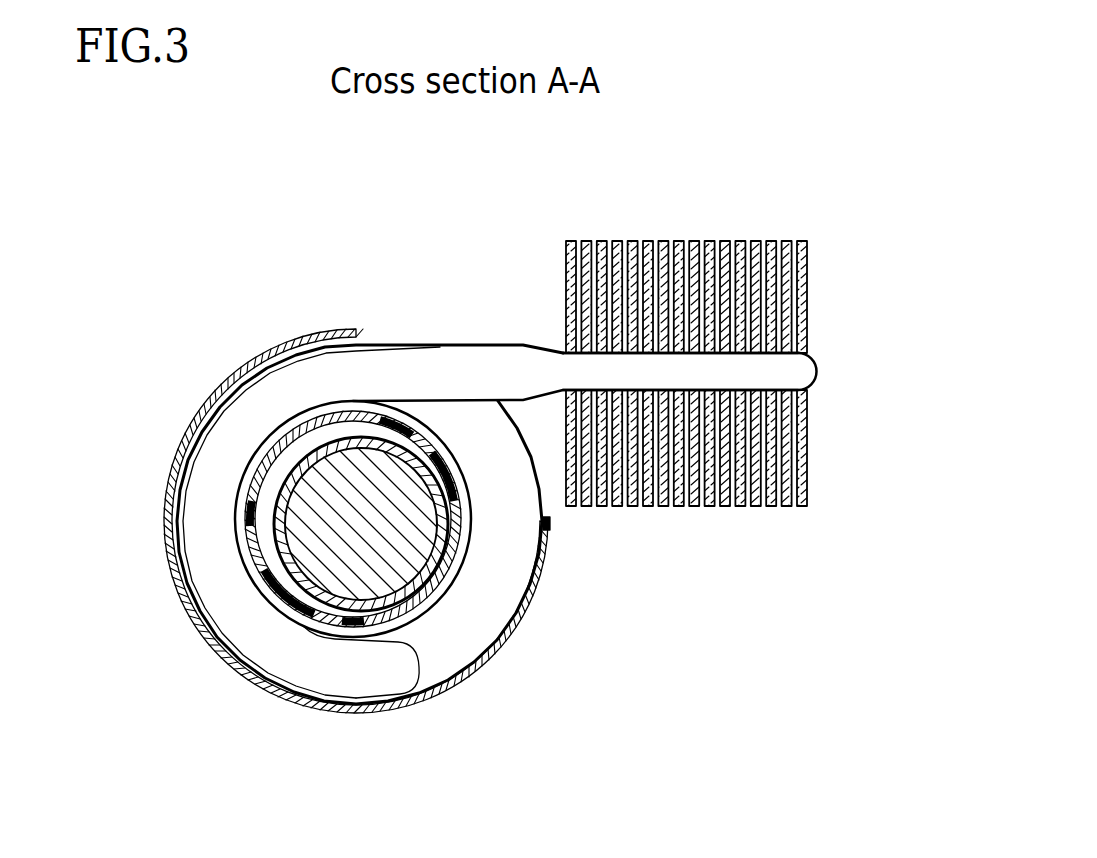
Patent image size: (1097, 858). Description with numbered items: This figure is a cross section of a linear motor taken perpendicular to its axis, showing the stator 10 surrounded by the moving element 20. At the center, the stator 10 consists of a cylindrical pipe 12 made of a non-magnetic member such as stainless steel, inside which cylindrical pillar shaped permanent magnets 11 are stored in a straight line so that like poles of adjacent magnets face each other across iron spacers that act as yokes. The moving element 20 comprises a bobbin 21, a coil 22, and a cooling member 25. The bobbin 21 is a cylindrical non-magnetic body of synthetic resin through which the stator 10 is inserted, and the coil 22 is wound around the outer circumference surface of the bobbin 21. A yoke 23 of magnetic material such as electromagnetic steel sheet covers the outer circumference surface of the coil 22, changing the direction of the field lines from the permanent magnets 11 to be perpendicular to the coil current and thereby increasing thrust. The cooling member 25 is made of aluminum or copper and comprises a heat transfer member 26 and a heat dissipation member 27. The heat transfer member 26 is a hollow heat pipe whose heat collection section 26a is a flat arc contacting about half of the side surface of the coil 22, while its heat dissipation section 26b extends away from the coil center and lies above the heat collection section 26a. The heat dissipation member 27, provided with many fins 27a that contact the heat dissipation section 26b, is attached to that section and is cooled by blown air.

The stator 10 is at (450, 588).
The permanent magnet 11 is at (398, 516).
The pipe 12 is at (420, 633).
The moving element 20 is at (351, 452).
The bobbin 21 is at (255, 535).
The coil 22 is at (512, 518).
The yoke 23 is at (170, 489).
The cooling member 25 is at (585, 310).
The heat transfer member 26 is at (585, 278).
The heat collection section 26a is at (296, 657).
The heat dissipation section 26b is at (585, 373).
The heat dissipation member 27 is at (677, 331).
The fin 27a is at (726, 240).